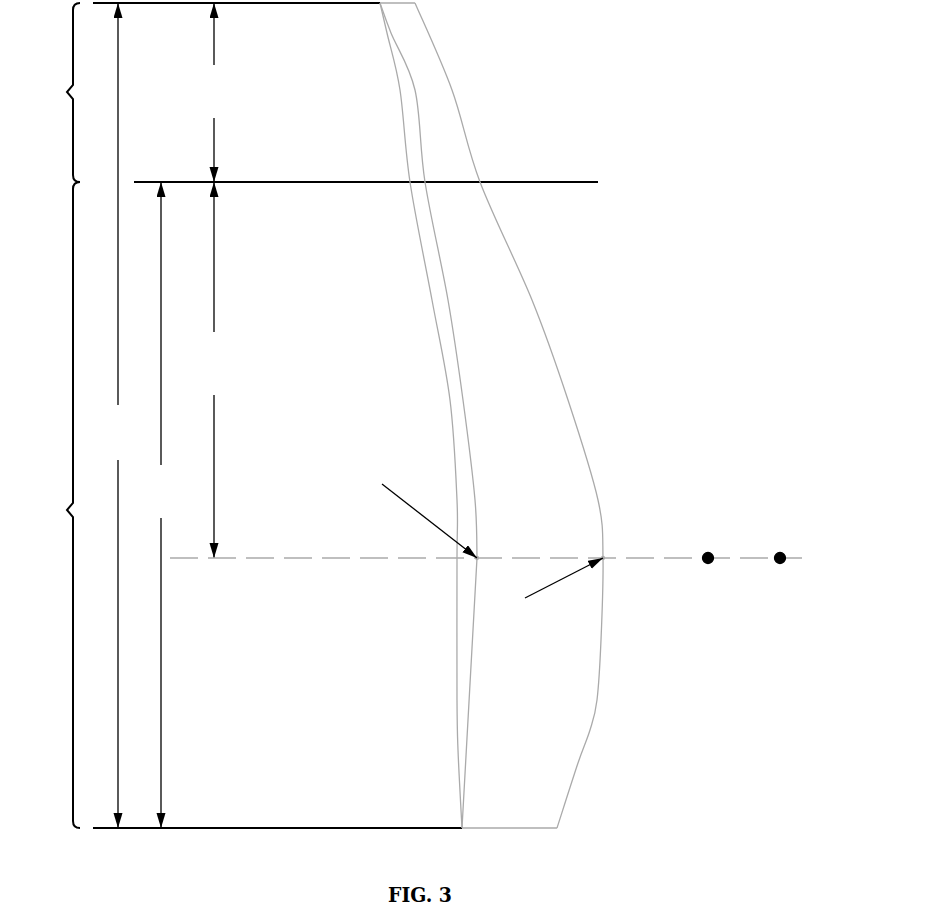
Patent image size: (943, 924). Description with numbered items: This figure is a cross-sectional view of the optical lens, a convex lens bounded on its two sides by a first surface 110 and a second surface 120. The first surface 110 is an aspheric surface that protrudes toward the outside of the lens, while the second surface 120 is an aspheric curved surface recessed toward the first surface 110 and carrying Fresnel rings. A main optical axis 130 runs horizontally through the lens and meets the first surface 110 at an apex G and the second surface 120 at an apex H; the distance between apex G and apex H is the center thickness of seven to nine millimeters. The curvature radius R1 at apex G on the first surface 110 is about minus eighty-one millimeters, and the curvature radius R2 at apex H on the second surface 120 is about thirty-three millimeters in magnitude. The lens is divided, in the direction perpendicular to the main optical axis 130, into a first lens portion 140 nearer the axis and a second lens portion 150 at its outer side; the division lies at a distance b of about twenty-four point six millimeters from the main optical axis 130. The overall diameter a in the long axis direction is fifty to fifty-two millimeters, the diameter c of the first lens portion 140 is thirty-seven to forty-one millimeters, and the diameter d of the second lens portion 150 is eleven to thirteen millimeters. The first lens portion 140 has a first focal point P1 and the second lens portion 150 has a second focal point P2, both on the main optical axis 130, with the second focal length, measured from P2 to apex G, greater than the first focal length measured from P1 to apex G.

The first surface 110 is at (577, 763).
The second surface 120 is at (468, 668).
The main optical axis 130 is at (663, 558).
The first lens portion 140 is at (50, 505).
The second lens portion 150 is at (53, 92).
The first focal point P1 is at (709, 562).
The second focal point P2 is at (781, 554).
The apex H is at (474, 562).
The apex G is at (607, 562).
The curvature radius R1 is at (554, 580).
The curvature radius R2 is at (429, 521).
The diameter a is at (118, 415).
The distance b is at (214, 370).
The diameter c is at (160, 505).
The diameter d is at (214, 92).